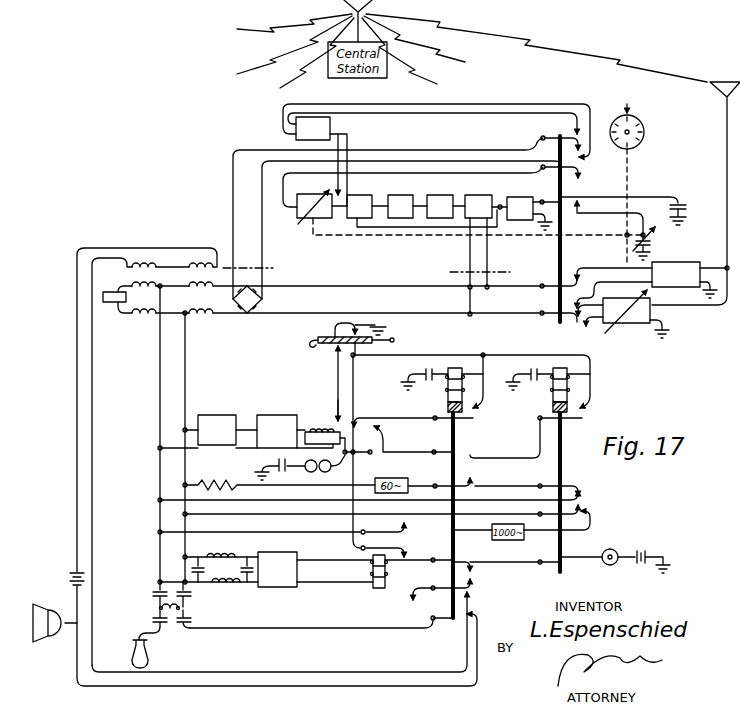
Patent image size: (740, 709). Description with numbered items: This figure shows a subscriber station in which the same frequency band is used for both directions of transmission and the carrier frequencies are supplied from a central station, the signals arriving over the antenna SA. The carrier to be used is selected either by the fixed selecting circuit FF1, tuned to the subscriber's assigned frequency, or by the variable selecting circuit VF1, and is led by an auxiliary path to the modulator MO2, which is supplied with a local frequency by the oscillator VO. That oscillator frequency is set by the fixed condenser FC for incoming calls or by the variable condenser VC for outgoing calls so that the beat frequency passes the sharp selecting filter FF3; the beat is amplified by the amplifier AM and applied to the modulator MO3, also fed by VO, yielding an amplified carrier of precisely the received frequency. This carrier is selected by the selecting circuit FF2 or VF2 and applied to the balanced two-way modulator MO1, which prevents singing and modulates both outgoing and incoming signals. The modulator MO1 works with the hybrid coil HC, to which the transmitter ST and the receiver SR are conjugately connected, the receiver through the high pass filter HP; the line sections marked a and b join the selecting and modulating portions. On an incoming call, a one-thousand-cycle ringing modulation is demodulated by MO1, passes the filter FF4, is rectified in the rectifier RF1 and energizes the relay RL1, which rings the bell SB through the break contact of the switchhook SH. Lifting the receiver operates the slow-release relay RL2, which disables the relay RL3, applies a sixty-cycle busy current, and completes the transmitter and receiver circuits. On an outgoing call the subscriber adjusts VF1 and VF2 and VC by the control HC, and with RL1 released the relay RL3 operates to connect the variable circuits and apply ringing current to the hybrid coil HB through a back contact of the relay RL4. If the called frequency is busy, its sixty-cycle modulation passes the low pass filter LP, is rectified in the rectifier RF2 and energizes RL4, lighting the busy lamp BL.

The receiving antenna SA is at (713, 91).
The hybrid coil / control HC is at (645, 132).
The fixed selecting circuit FF2 is at (330, 122).
The variable selecting circuit VF2 is at (322, 195).
The modulator MO3 is at (358, 192).
The amplifier AM is at (398, 195).
The sharp selecting filter FF3 is at (440, 192).
The modulator MO2 is at (477, 192).
The oscillator VO is at (519, 197).
The fixed condenser FC is at (686, 207).
The variable condenser VC is at (651, 240).
The fixed selecting circuit FF1 is at (683, 265).
The variable selecting circuit VF1 is at (650, 316).
The hybrid coil HB is at (133, 292).
The two-way modulator MO1 is at (267, 299).
The line section b- b is at (248, 262).
The line section a- a is at (475, 273).
The switchhook SH is at (348, 370).
The slow-release relay RL2 is at (445, 391).
The slow-release relay RL3 is at (551, 391).
The 1000-cycle filter FF4 is at (232, 413).
The rectifier RF1 is at (272, 413).
The relay RL1 is at (320, 430).
The bell SB is at (337, 468).
The low pass filter LP is at (221, 565).
The rectifier RF2 is at (285, 551).
The relay RL4 is at (387, 572).
The busy lamp BL is at (612, 550).
The high pass filter HP is at (153, 594).
The receiver SR is at (150, 651).
The transmitter ST is at (42, 630).